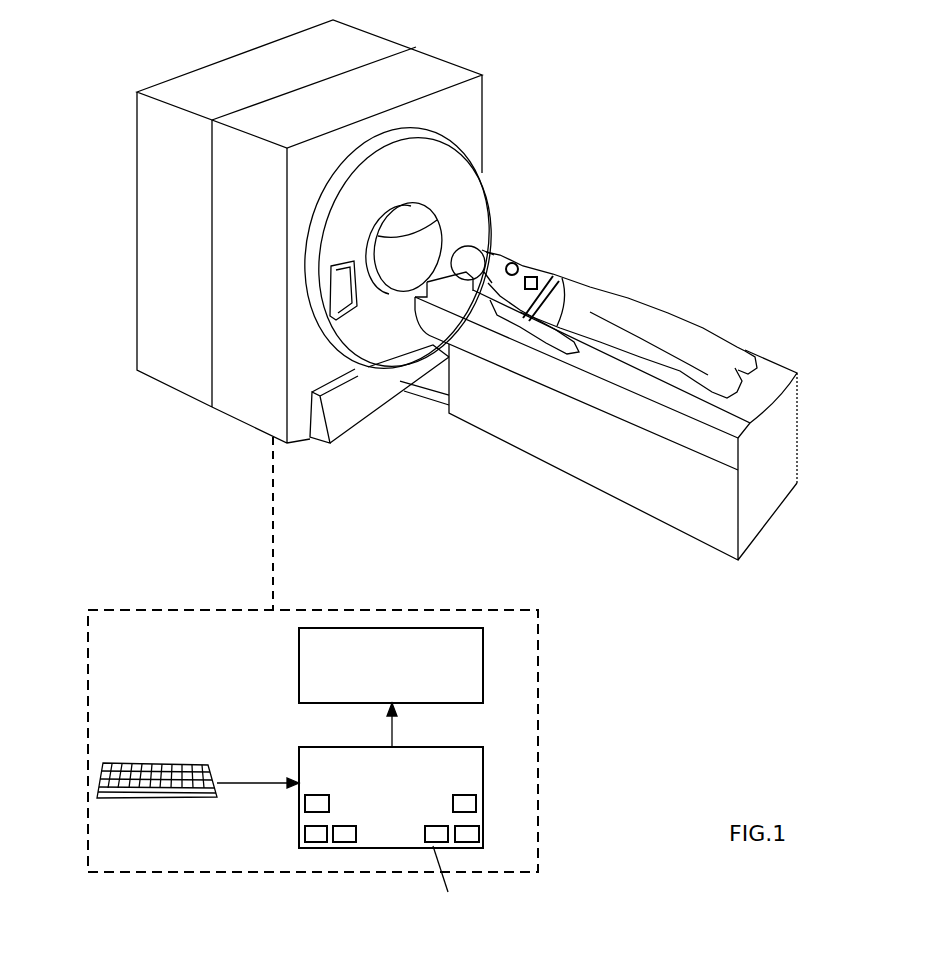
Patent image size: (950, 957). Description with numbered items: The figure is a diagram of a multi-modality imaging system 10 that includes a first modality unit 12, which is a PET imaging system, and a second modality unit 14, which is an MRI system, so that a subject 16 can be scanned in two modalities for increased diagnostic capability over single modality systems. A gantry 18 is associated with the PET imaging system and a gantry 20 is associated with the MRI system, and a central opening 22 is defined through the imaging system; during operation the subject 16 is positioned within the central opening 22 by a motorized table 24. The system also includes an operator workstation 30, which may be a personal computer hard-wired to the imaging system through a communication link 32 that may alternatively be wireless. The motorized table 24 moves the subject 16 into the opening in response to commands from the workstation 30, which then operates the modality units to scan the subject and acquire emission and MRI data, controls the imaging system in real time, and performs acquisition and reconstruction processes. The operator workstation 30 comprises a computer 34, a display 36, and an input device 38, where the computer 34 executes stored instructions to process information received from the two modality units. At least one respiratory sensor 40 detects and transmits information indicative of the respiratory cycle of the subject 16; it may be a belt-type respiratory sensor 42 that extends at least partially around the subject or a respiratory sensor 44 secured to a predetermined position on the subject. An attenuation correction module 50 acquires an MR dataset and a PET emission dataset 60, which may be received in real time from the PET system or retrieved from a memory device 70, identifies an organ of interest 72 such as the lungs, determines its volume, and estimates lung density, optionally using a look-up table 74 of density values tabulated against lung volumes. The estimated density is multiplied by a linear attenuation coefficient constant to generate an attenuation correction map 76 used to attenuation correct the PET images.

The multi-modality imaging system 10 is at (757, 73).
The first modality unit 12 is at (233, 420).
The second modality unit 14 is at (166, 388).
The subject 16 is at (687, 352).
The gantry 18 is at (476, 102).
The gantry 20 is at (228, 58).
The central opening 22 is at (437, 222).
The motorized table 24 is at (568, 457).
The operator workstation 30 is at (88, 612).
The communication link 32 is at (280, 490).
The computer 34 is at (299, 757).
The display 36 is at (299, 665).
The input device 38 is at (152, 762).
The respiratory sensor 40 is at (591, 253).
The belt-type respiratory sensor 42 is at (550, 287).
The respiratory sensor 44 is at (555, 278).
The attenuation correction module 50 is at (313, 848).
The PET emission dataset 60 is at (347, 848).
The memory device 70 is at (477, 848).
The organ of interest 72 is at (519, 263).
The look-up table 74 is at (476, 805).
The attenuation correction map 76 is at (305, 805).